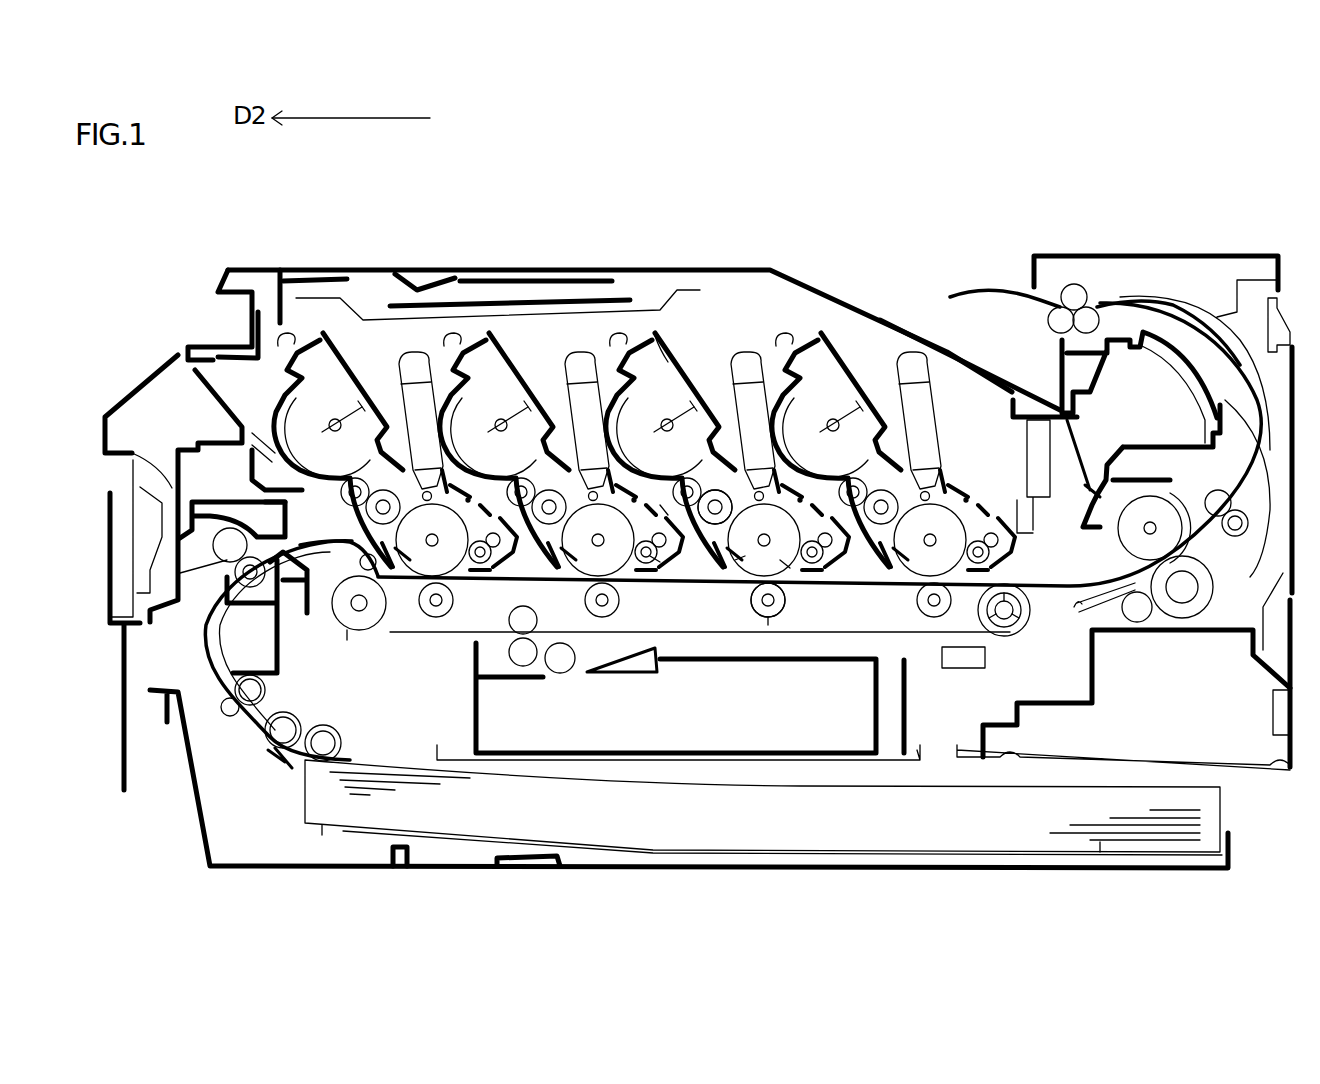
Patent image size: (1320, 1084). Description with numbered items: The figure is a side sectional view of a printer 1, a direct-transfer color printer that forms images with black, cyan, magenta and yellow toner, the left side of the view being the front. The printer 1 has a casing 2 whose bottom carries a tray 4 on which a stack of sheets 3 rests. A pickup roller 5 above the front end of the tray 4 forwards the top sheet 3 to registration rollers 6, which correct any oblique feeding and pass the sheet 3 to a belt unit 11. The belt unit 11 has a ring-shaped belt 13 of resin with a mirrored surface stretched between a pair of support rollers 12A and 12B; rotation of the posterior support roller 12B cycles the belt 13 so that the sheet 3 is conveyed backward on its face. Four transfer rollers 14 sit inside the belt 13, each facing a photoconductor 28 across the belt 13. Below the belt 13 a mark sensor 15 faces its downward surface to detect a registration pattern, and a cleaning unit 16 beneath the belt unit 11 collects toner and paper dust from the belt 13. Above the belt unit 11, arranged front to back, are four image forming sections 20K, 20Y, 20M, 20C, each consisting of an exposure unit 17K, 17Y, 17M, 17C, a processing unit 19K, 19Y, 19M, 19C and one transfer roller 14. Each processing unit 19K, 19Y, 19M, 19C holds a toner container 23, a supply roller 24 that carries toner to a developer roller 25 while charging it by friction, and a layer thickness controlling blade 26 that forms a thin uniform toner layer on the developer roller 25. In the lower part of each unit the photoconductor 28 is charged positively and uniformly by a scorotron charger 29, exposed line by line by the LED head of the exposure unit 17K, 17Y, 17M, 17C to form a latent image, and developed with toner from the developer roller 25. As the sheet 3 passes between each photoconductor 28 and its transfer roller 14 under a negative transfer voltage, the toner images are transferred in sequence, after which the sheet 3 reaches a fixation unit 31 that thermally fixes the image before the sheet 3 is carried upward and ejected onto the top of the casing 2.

The printer 1 is at (812, 190).
The casing 2 is at (1078, 256).
The sheets 3 is at (1137, 800).
The tray 4 is at (1237, 848).
The pickup roller 5 is at (342, 745).
The registration rollers 6 is at (250, 585).
The belt unit 11 is at (353, 642).
The support roller 12A is at (345, 620).
The support roller 12B is at (1020, 630).
The belt 13 is at (381, 634).
The transfer rollers 14 is at (768, 617).
The mark sensor 15 is at (957, 668).
The cleaning unit 16 is at (755, 757).
The exposure unit 17K is at (407, 350).
The exposure unit 17Y is at (577, 350).
The exposure unit 17M is at (740, 350).
The exposure unit 17C is at (907, 350).
The processing unit 19K is at (297, 312).
The processing unit 19Y is at (461, 325).
The processing unit 19M is at (641, 325).
The processing unit 19C is at (803, 325).
The image forming section 20K is at (409, 588).
The image forming section 20Y is at (571, 598).
The image forming section 20M is at (708, 595).
The image forming section 20C is at (883, 595).
The toner container 23 is at (668, 362).
The supply roller 24 is at (656, 558).
The developer roller 25 is at (663, 513).
The layer thickness controlling blade 26 is at (716, 490).
The photoconductor 28 is at (784, 606).
The scorotron charger 29 is at (783, 565).
The fixation unit 31 is at (1100, 548).